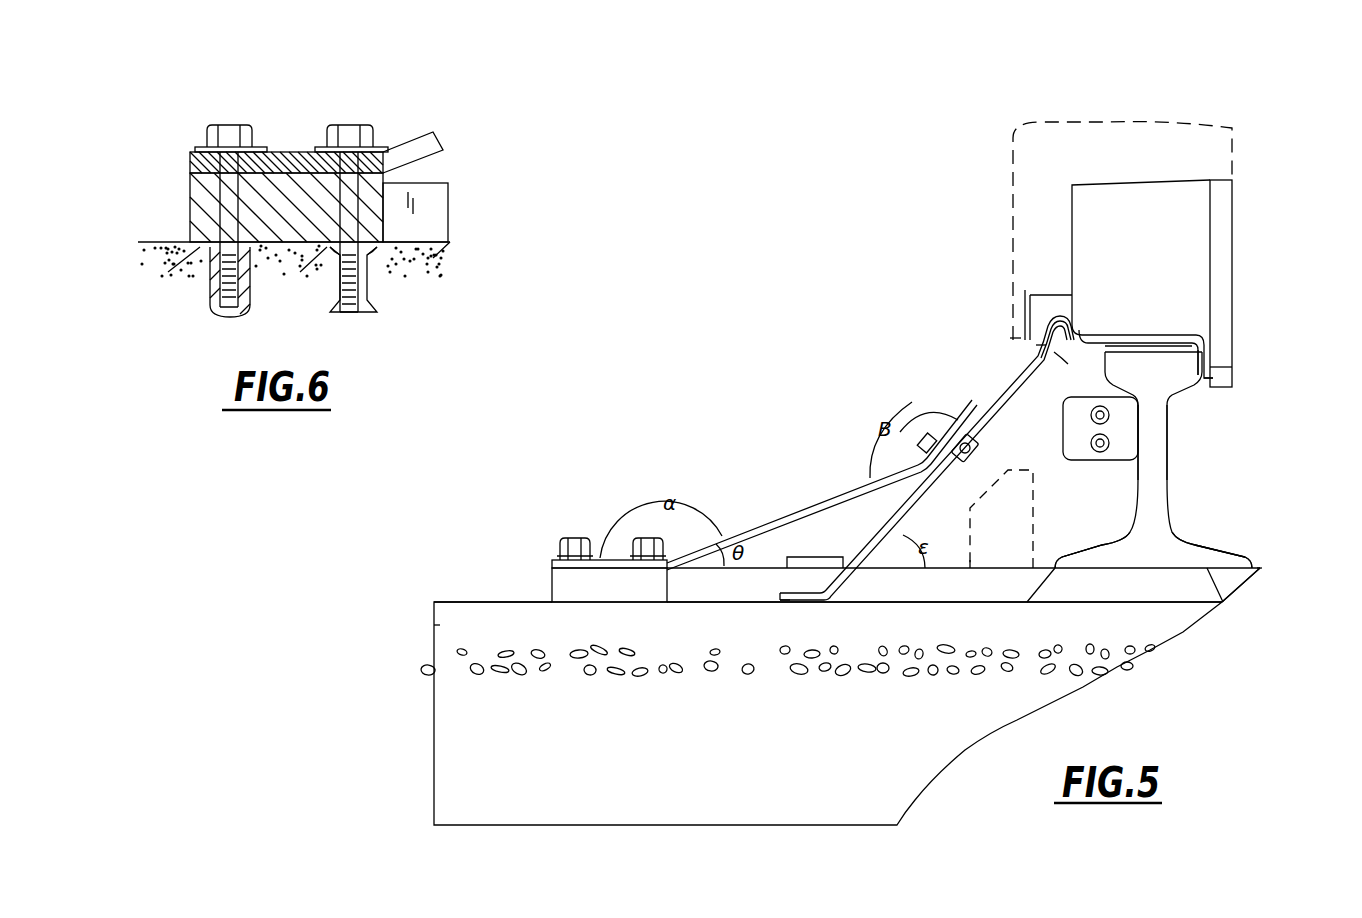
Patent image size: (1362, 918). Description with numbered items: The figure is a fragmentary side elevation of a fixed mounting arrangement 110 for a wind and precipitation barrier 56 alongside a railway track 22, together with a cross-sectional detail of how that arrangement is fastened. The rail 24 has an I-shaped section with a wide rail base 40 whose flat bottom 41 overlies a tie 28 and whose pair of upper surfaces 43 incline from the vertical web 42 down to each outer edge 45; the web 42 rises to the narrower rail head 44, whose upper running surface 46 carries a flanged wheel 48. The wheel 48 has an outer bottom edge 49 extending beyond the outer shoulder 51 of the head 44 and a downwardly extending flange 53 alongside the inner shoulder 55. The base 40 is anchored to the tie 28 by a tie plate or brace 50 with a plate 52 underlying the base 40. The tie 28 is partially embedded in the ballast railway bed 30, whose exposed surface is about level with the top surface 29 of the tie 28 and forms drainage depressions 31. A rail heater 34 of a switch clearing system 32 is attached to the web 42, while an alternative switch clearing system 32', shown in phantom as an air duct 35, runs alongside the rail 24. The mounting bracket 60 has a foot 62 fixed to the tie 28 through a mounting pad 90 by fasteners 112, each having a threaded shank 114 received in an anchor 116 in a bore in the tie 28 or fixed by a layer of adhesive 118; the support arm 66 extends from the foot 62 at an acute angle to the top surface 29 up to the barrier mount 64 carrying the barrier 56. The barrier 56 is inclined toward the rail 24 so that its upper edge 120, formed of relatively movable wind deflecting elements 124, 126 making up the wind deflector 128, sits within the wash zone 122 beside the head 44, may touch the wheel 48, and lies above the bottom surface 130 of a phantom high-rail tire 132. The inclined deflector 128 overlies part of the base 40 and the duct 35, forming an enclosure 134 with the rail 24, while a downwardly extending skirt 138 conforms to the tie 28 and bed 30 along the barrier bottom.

In FIG. 5, the track 22 is at (1180, 490).
In FIG. 5, the rail 24 is at (1167, 332).
In FIG. 6, the tie 28 is at (440, 252).
In FIG. 5, the tie 28 is at (420, 727).
In FIG. 6, the top surface of tie 29 is at (152, 245).
In FIG. 5, the top surface of tie 29 is at (440, 602).
In FIG. 5, the railway bed 30 is at (405, 657).
In FIG. 5, the depression 31 is at (490, 635).
In FIG. 5, the switch clearing system 32 is at (1037, 515).
In FIG. 5, the switch clearing system embodiment 32' is at (878, 596).
In FIG. 5, the rail heater 34 is at (1130, 445).
In FIG. 5, the duct 35 is at (1000, 550).
In FIG. 5, the rail base 40 is at (1240, 548).
In FIG. 5, the flat bottom 41 is at (1225, 613).
In FIG. 5, the web 42 is at (1170, 437).
In FIG. 5, the upper surface of rail base 43 is at (1100, 548).
In FIG. 5, the rail head 44 is at (1236, 383).
In FIG. 5, the outer edge of rail base 45 is at (1040, 575).
In FIG. 5, the upper running surface 46 is at (1175, 333).
In FIG. 5, the flanged wheel 48 is at (1240, 190).
In FIG. 5, the outer bottom edge of wheel 49 is at (1085, 333).
In FIG. 5, the tie plate or brace 50 is at (1280, 567).
In FIG. 5, the outer shoulder of rail head 51 is at (1113, 346).
In FIG. 6, the plate 52 is at (442, 185).
In FIG. 5, the plate 52 is at (1243, 587).
In FIG. 5, the wheel flange 53 is at (1240, 370).
In FIG. 5, the inner shoulder of rail head 55 is at (1204, 345).
In FIG. 5, the barrier 56 is at (880, 518).
In FIG. 5, the mounting bracket 60 is at (728, 500).
In FIG. 6, the foot 62 is at (280, 152).
In FIG. 5, the foot 62 is at (550, 556).
In FIG. 5, the barrier mount 64 is at (958, 440).
In FIG. 6, the support arm 66 is at (425, 135).
In FIG. 5, the support arm 66 is at (778, 511).
In FIG. 6, the mounting pad 90 is at (190, 182).
In FIG. 5, the mounting pad 90 is at (552, 576).
In FIG. 5, the mounting arrangement 110 is at (618, 500).
In FIG. 6, the fastener 112 is at (240, 125).
In FIG. 5, the fastener 112 is at (595, 518).
In FIG. 6, the threaded shank 114 is at (215, 272).
In FIG. 6, the anchor 116 is at (333, 290).
In FIG. 6, the layer of adhesive 118 is at (250, 283).
In FIG. 5, the upper edge of barrier 120 is at (1062, 325).
In FIG. 5, the wash zone 122 is at (1045, 293).
In FIG. 5, the wind deflecting element 124 is at (1037, 348).
In FIG. 5, the wind deflecting element 126 is at (1071, 372).
In FIG. 5, the wind deflector 128 is at (1025, 372).
In FIG. 5, the tire bottom surface 130 is at (1010, 345).
In FIG. 5, the tire 132 is at (1010, 157).
In FIG. 5, the enclosure 134 is at (938, 405).
In FIG. 5, the skirt 138 is at (782, 606).